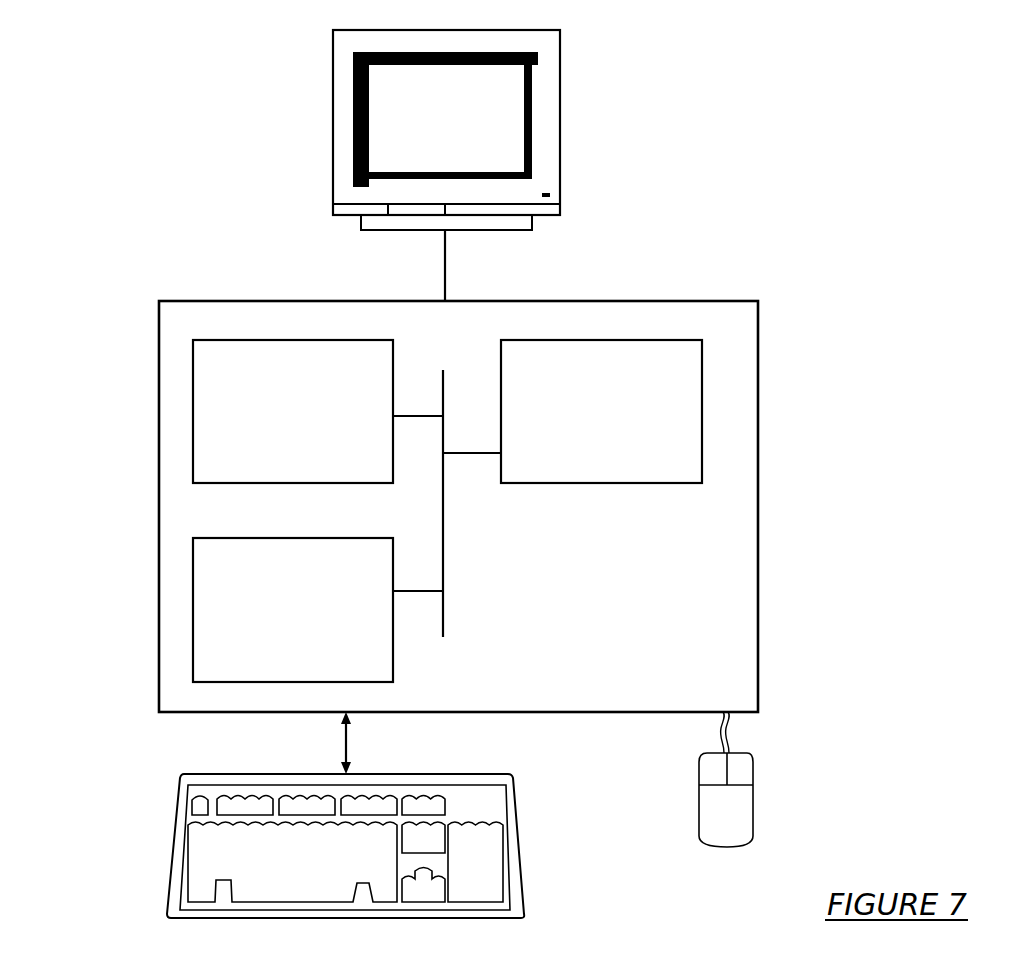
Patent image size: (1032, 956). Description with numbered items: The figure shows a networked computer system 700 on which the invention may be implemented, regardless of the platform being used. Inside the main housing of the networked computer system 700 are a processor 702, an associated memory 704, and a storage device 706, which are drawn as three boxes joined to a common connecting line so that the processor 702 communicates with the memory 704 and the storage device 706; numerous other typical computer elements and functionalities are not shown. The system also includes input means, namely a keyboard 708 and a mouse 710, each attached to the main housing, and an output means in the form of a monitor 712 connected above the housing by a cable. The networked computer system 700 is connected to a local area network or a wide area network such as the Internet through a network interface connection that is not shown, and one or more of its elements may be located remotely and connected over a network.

The networked computer system 700 is at (754, 100).
The processor 702 is at (581, 423).
The memory 704 is at (274, 423).
The storage device 706 is at (271, 622).
The keyboard 708 is at (267, 883).
The mouse 710 is at (708, 822).
The monitor 712 is at (426, 133).